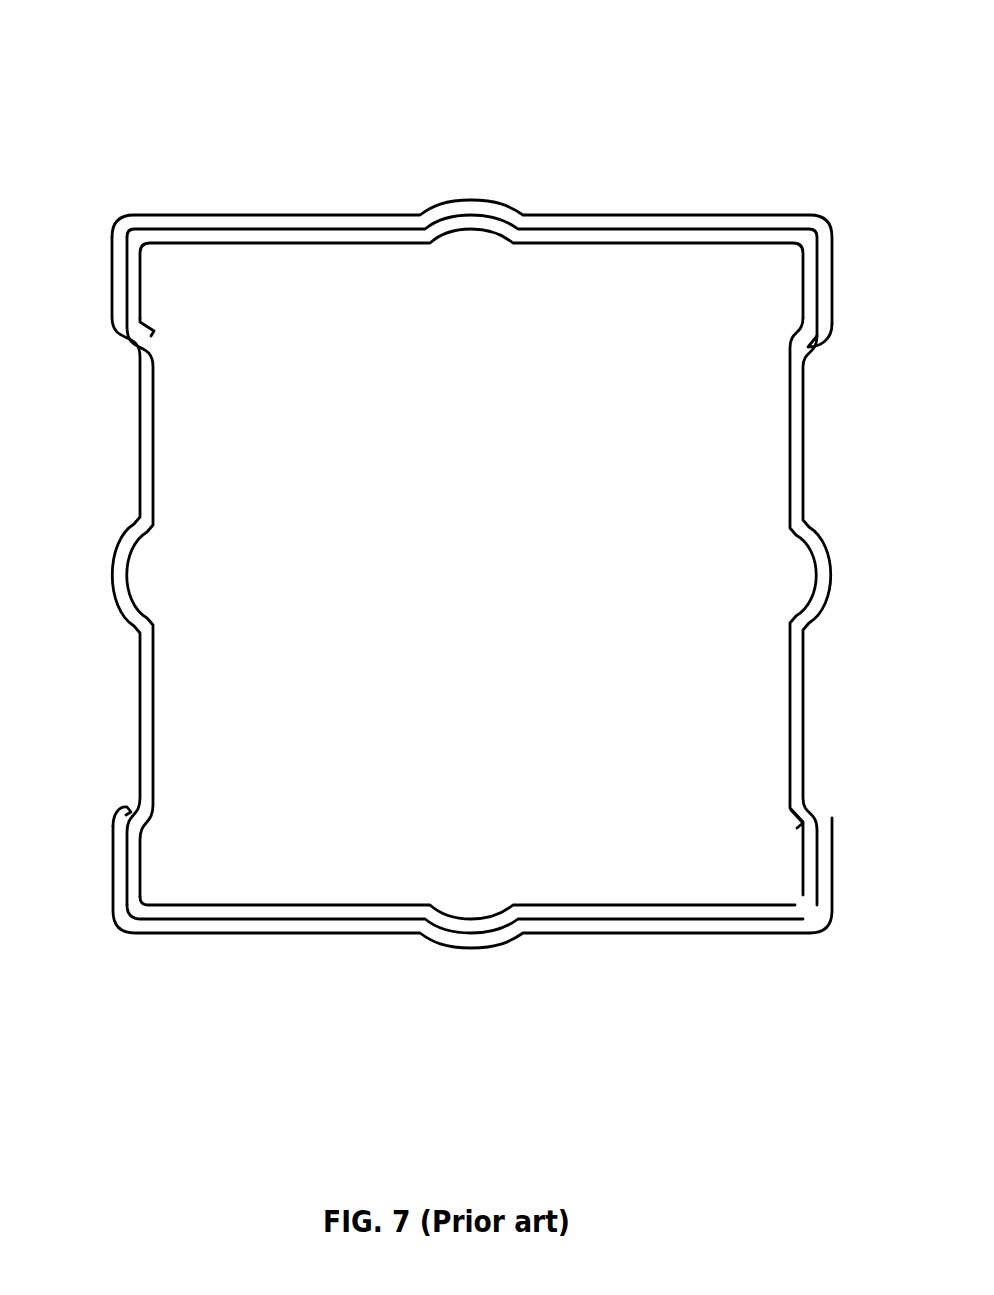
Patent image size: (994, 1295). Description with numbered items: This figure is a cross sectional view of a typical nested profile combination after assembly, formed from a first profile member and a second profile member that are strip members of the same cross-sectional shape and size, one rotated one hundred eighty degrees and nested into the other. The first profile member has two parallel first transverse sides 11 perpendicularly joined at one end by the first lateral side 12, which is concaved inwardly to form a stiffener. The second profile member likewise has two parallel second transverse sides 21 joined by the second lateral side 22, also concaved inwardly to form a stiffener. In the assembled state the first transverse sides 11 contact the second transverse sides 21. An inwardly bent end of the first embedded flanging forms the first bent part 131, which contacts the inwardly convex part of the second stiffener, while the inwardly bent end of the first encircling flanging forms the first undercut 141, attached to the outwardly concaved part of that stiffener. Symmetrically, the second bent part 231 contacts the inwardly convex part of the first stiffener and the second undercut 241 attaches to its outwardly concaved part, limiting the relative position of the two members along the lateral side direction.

The first transverse sides 11 is at (359, 223).
The first lateral side 12 is at (174, 462).
The first bent part 131 is at (794, 822).
The first undercut 141 is at (830, 333).
The second transverse sides 21 is at (572, 237).
The second lateral side 22 is at (764, 477).
The second bent part 231 is at (147, 323).
The second undercut 241 is at (124, 808).